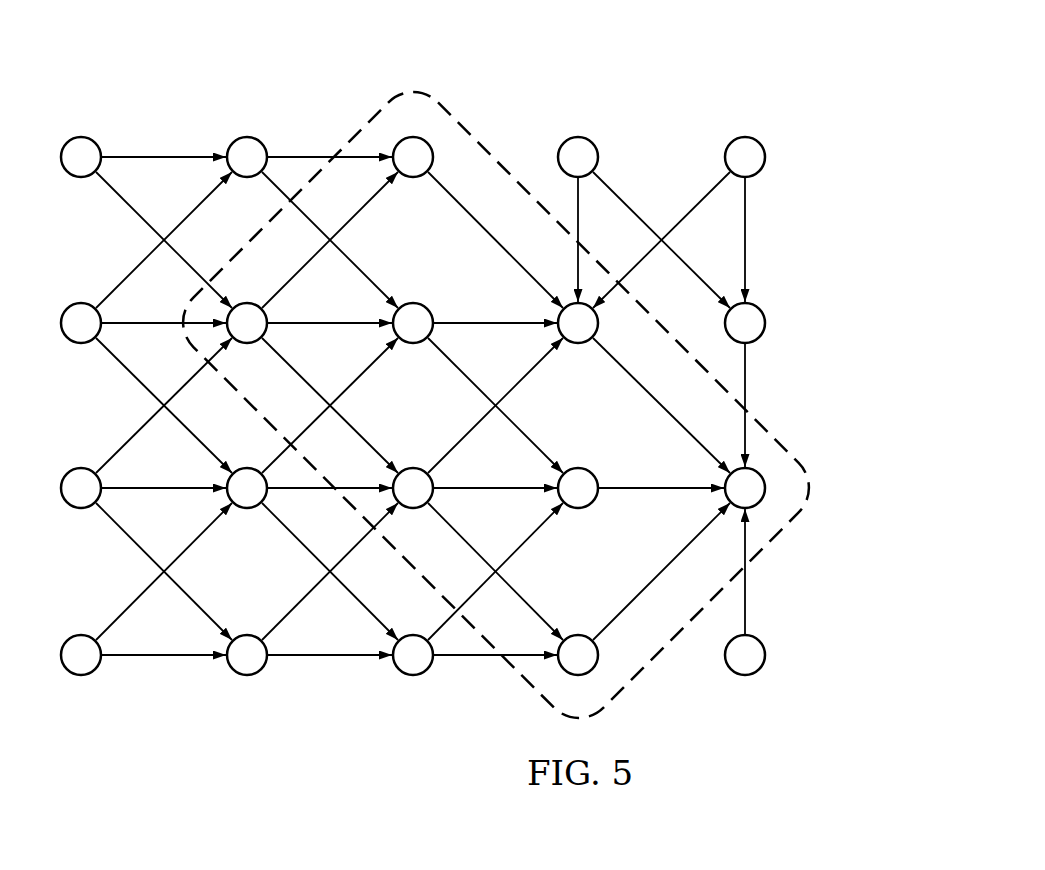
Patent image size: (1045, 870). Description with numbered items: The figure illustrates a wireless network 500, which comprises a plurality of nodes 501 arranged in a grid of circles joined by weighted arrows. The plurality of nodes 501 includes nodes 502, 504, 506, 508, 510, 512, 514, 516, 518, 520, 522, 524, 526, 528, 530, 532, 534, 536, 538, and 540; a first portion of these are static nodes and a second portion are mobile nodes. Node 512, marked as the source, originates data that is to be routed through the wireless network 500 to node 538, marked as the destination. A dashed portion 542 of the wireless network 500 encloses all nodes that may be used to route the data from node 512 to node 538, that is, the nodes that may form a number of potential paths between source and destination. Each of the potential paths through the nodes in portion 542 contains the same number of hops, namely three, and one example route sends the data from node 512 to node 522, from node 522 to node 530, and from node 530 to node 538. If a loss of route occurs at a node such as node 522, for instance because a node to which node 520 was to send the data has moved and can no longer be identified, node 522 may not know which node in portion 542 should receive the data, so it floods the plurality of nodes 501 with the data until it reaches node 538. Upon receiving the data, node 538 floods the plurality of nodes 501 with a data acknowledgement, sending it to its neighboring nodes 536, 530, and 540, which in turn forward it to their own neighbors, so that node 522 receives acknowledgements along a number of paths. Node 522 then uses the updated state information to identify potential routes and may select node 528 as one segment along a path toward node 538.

The wireless network 500 is at (717, 70).
The plurality of nodes 501 is at (150, 124).
The node 502 is at (80, 136).
The node 504 is at (80, 302).
The node 506 is at (80, 509).
The node 508 is at (80, 676).
The node 510 is at (243, 136).
The node 512 is at (267, 333).
The node 514 is at (243, 509).
The node 516 is at (243, 676).
The node 518 is at (410, 178).
The node 520 is at (410, 302).
The node 522 is at (410, 467).
The node 524 is at (410, 676).
The node 526 is at (586, 136).
The node 528 is at (598, 333).
The node 530 is at (584, 509).
The node 532 is at (584, 634).
The node 534 is at (766, 157).
The node 536 is at (766, 323).
The node 538 is at (737, 510).
The node 540 is at (766, 660).
The portion 542 is at (352, 120).